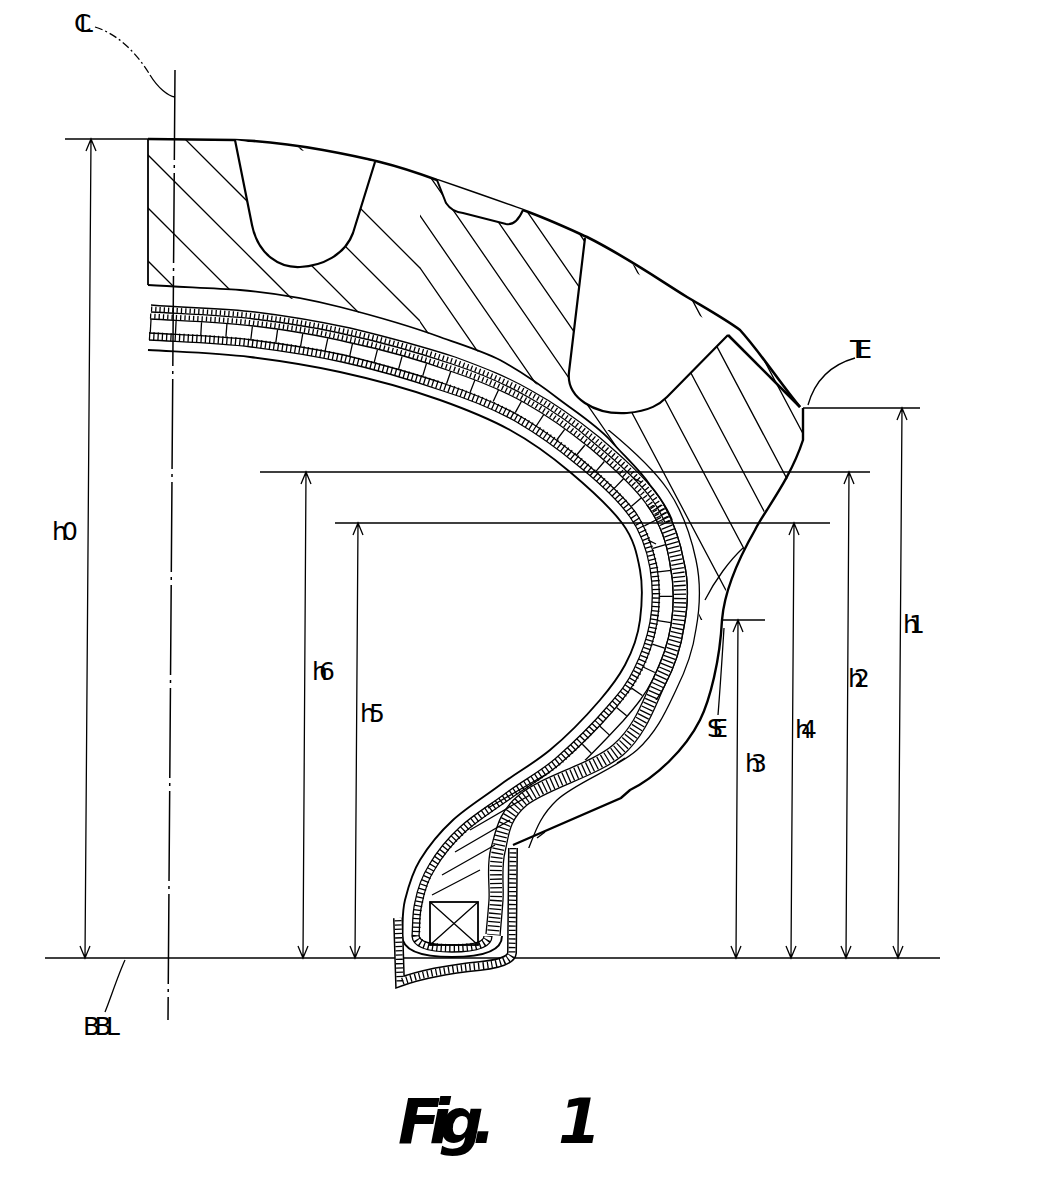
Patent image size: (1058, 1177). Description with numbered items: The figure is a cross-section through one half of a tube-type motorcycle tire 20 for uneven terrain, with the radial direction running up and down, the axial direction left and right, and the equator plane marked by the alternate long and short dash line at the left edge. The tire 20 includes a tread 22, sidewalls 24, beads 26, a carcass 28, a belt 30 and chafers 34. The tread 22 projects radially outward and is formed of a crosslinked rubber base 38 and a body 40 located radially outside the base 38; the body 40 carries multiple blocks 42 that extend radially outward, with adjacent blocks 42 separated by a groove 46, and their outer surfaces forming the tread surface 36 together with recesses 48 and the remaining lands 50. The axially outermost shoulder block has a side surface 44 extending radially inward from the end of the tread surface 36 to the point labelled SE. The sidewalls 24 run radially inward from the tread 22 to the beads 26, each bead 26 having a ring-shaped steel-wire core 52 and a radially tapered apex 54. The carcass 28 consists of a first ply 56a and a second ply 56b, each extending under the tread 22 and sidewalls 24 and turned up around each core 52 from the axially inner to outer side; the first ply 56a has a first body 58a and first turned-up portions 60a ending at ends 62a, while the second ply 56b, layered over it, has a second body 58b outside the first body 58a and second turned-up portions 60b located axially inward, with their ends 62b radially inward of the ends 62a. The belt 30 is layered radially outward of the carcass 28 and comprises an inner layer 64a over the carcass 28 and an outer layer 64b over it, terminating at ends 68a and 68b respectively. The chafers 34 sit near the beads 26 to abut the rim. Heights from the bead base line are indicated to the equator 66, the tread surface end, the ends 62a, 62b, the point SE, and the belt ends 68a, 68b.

The tire 20 is at (786, 150).
The tread 22 is at (529, 362).
The sidewalls 24 is at (655, 806).
The beads 26 is at (539, 860).
The carcass 28 is at (411, 635).
The belt 30 is at (512, 517).
The chafers 34 is at (408, 990).
The tread surface 36 is at (757, 375).
The base 38 is at (542, 262).
The body 40 is at (535, 222).
The blocks 42 is at (202, 150).
The side surface 44 is at (743, 548).
The groove 46 is at (370, 190).
The recesses 48 is at (467, 205).
The land 50 is at (237, 140).
The core 52 is at (470, 930).
The apex 54 is at (470, 877).
The first ply 56a is at (283, 350).
The second ply 56b is at (327, 338).
The first body 58a is at (653, 573).
The second body 58b is at (670, 608).
The first turned-up portions 60a is at (617, 763).
The second turned-up portions 60b is at (537, 838).
The ends of the first turned-up portions 62a is at (643, 463).
The ends of the second turned-up portions 62b is at (672, 527).
The inner layer 64a is at (377, 380).
The outer layer 64b is at (427, 367).
The equator 66 is at (170, 138).
The end of the inner layer 68a is at (648, 540).
The end of the outer layer 68b is at (633, 478).